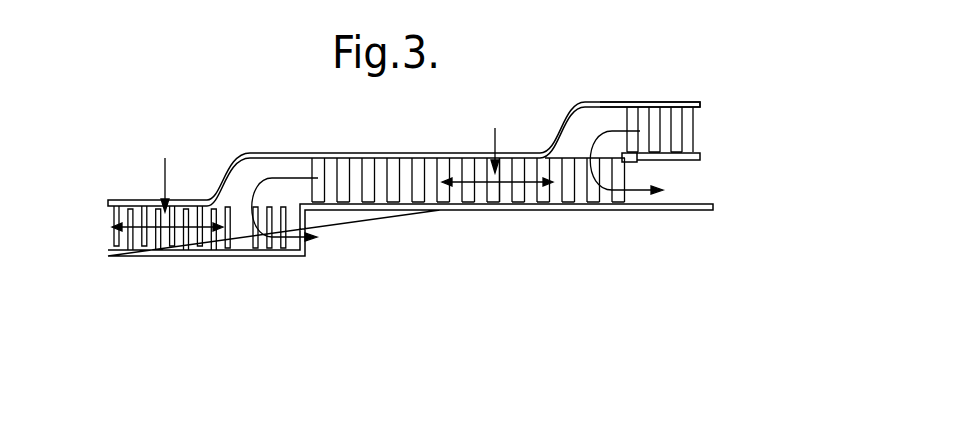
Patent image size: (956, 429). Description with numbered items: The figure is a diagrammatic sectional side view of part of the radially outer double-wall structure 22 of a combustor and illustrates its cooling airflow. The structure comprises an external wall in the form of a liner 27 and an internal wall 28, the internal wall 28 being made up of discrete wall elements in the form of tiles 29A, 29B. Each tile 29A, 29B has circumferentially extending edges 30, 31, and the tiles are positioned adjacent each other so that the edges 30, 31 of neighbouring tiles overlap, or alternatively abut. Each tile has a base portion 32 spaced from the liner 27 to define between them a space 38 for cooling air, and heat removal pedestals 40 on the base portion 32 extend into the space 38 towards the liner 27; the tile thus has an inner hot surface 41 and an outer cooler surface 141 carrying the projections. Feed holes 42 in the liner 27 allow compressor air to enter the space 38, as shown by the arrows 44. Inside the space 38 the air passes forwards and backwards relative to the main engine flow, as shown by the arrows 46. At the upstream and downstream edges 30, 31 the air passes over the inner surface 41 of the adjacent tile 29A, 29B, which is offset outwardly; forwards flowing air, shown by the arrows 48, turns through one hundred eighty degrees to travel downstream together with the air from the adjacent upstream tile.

The radially outer double-wall structure 22 is at (738, 50).
The liner 27 is at (654, 103).
The internal wall 28 is at (555, 210).
The tile 29A is at (122, 255).
The tile 29B is at (462, 210).
The circumferentially extending edge 30 is at (637, 162).
The circumferentially extending edge 31 is at (697, 210).
The base portion 32 is at (427, 210).
The space 38 is at (592, 123).
The pedestals 40 is at (330, 202).
The inner hot surface 41 is at (400, 197).
The feed holes 42 is at (168, 200).
The arrows 44 is at (163, 172).
The arrows 46 is at (188, 247).
The arrows 48 is at (259, 166).
The outer cooler surface 141 is at (330, 162).